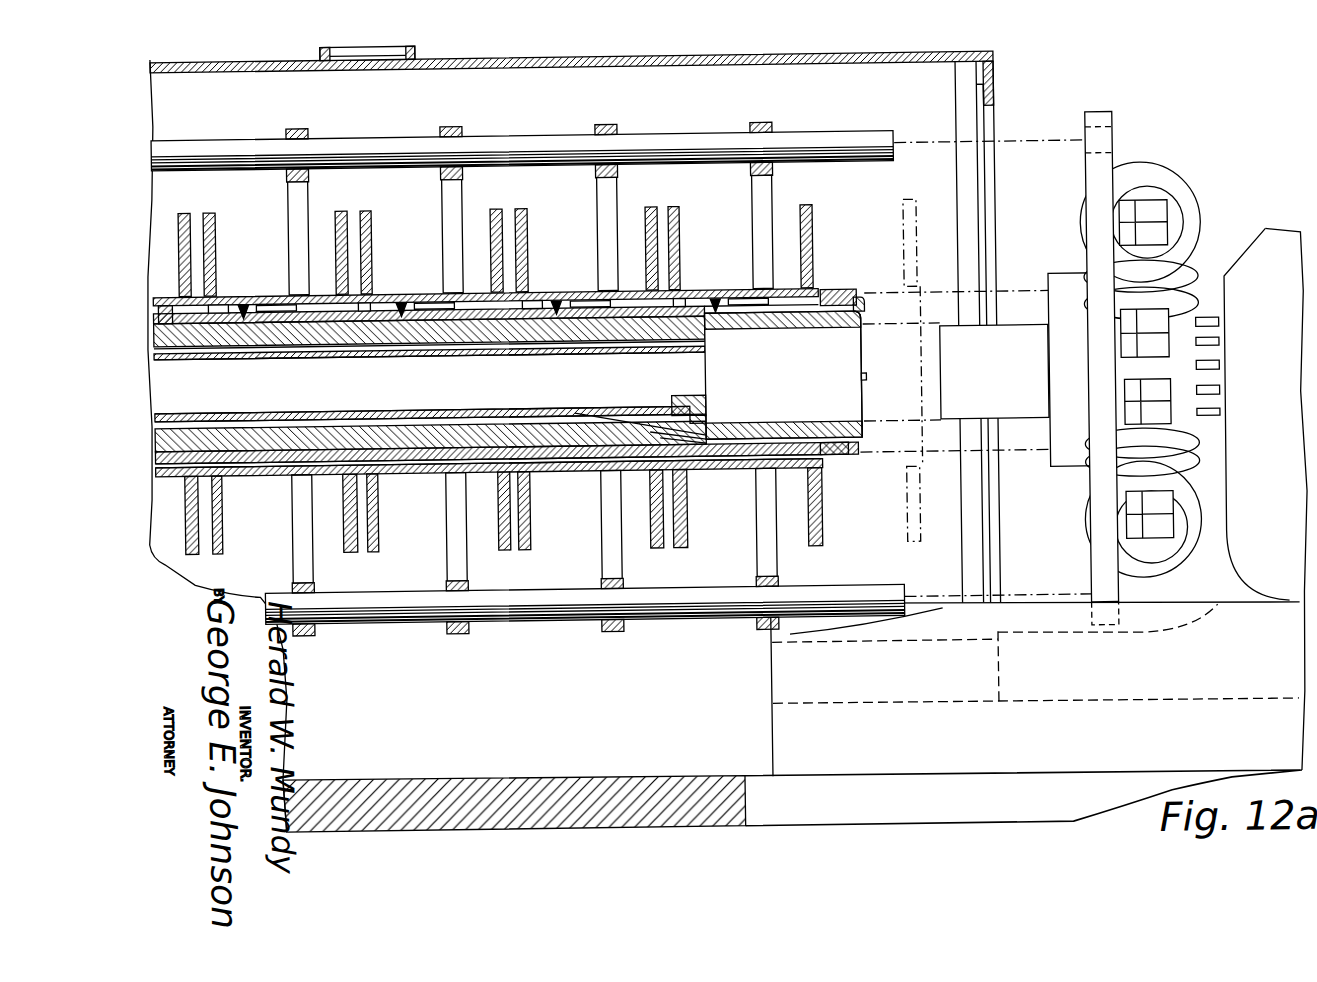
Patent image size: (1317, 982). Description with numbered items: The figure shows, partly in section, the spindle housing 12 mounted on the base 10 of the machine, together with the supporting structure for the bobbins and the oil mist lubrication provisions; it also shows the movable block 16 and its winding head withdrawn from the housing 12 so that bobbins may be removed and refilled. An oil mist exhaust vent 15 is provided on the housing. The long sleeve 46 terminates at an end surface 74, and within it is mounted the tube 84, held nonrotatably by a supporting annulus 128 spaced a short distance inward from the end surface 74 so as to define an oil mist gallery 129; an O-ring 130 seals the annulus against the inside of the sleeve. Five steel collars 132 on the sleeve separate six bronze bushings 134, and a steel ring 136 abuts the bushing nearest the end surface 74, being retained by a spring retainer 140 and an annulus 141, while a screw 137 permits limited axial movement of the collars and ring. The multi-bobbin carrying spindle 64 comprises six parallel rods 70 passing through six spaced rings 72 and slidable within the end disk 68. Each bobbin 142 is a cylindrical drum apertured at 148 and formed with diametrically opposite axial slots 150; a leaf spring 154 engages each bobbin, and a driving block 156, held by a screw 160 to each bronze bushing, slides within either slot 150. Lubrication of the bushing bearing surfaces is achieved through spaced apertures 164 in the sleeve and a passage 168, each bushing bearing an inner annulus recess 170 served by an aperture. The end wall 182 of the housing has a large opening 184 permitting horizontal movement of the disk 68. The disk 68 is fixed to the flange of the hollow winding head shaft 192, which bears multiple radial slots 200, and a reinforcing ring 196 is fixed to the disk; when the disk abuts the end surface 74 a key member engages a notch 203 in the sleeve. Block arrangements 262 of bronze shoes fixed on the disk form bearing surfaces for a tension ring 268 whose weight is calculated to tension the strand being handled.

The base 10 is at (470, 778).
The spindle housing 12 is at (978, 58).
The oil mist exhaust vent 15 is at (422, 50).
The movable block 16 is at (1268, 262).
The sleeve 46 is at (800, 331).
The multi-bobbin carrying spindle 64 is at (659, 132).
The end disk 68 is at (1092, 118).
The rods 70 is at (843, 133).
The rings 72 is at (302, 123).
The end surface 74 is at (862, 436).
The second tube 84 is at (518, 354).
The supporting annulus 128 is at (708, 380).
The oil mist gallery 129 is at (322, 348).
The O-ring 130 is at (686, 398).
The steel collars 132 is at (246, 298).
The bronze bushings 134 is at (296, 300).
The steel ring 136 is at (848, 292).
The screw 137 is at (866, 324).
The spring retainer 140 is at (868, 306).
The annulus 141 is at (836, 458).
The bobbins 142 is at (190, 210).
The apertures 148 is at (372, 299).
The slots 150 is at (176, 305).
The leaf spring 154 is at (228, 299).
The driving block 156 is at (236, 318).
The screw 160 is at (398, 318).
The apertures 164 is at (500, 420).
The passage 168 is at (708, 430).
The inner annulus recess 170 is at (256, 341).
The end wall 182 is at (999, 85).
The opening 184 is at (996, 108).
The hollow winding head shaft 192 is at (1028, 332).
The reinforcing ring 196 is at (1068, 472).
The radial slots 200 is at (1222, 372).
The notch 203 is at (868, 380).
The block arrangement 262 is at (1193, 234).
The tension ring 268 is at (1155, 178).